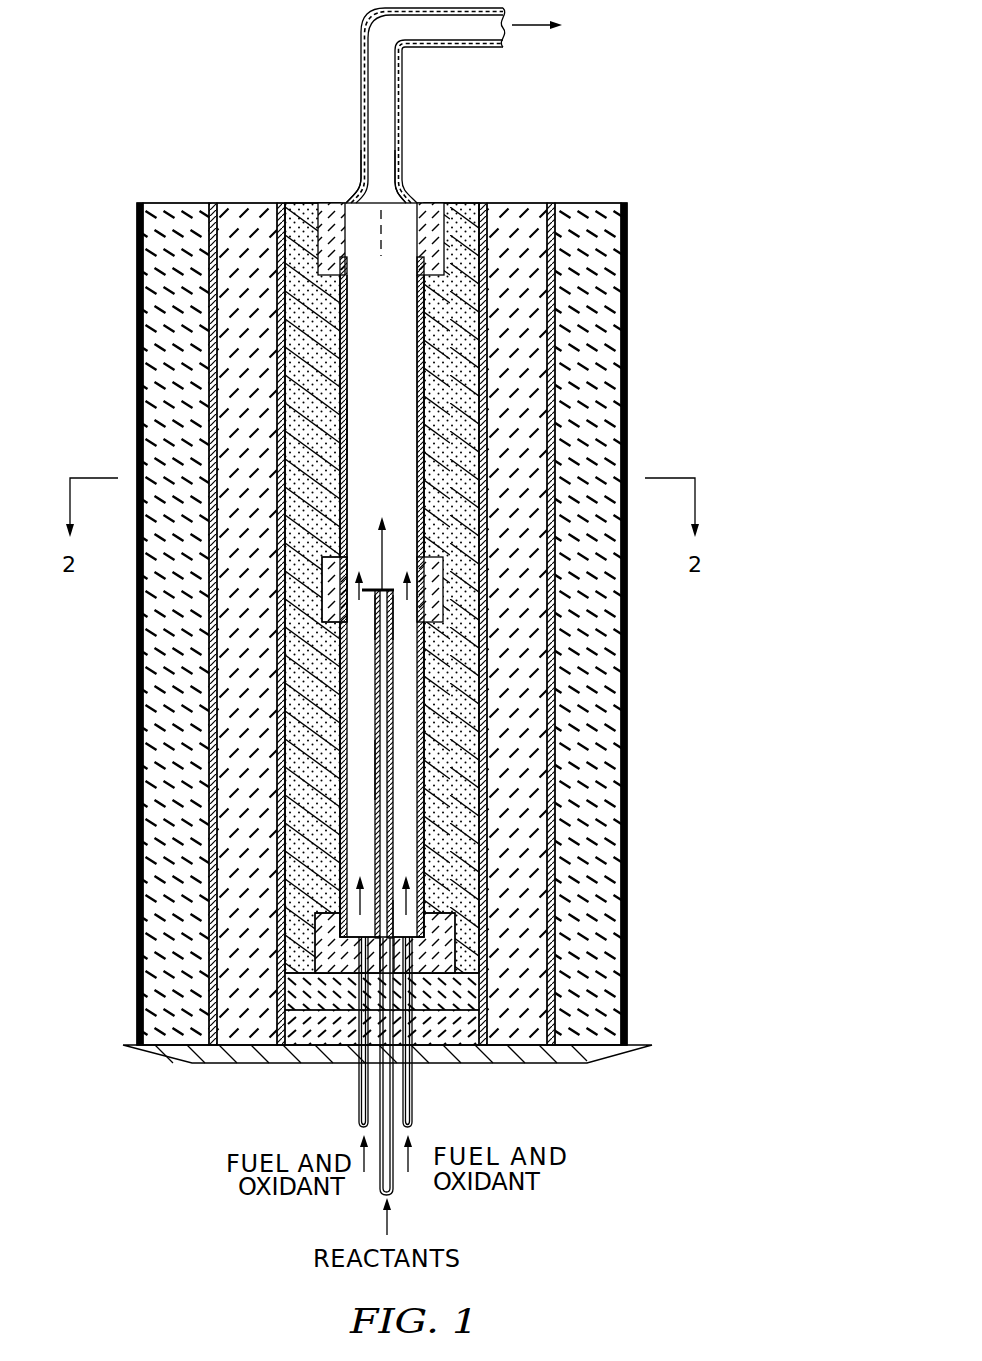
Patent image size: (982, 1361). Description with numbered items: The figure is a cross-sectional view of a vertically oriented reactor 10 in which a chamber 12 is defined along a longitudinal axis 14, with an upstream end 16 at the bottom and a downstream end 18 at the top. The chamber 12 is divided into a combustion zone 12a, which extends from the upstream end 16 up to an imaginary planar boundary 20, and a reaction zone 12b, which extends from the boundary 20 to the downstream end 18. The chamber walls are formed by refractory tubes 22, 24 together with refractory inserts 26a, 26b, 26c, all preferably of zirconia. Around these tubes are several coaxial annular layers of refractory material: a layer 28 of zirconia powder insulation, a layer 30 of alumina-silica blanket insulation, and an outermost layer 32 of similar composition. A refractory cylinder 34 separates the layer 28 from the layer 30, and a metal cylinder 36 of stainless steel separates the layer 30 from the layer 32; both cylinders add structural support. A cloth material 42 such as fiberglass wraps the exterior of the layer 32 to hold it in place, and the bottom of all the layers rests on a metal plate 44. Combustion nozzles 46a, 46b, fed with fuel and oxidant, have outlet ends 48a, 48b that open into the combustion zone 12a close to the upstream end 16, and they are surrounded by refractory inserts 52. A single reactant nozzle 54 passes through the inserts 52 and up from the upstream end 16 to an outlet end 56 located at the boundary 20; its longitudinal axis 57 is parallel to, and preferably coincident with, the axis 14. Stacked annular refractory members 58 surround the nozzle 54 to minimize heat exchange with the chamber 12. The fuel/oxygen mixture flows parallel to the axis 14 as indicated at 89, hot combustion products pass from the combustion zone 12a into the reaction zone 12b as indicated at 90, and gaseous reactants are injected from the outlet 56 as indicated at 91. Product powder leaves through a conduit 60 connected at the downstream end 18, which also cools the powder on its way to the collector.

The reactor 10 is at (662, 350).
The chamber 12 is at (415, 197).
The combustion zone 12a is at (349, 661).
The reaction zone 12b is at (398, 384).
The longitudinal axis 14 is at (358, 191).
The upstream end 16 is at (399, 937).
The downstream end 18 is at (395, 189).
The boundary 20 is at (362, 588).
The refractory tube 22 is at (375, 603).
The refractory tube 24 is at (348, 431).
The insert 26a is at (447, 915).
The insert 26b is at (337, 548).
The insert 26c is at (338, 247).
The layer 28 is at (470, 674).
The layer 30 is at (535, 674).
The layer 32 is at (608, 674).
The refractory cylinder 34 is at (487, 746).
The metal cylinder 36 is at (555, 745).
The cloth material 42 is at (628, 862).
The metal plate 44 is at (213, 1064).
The combustion nozzle 46a is at (359, 1120).
The combustion nozzle 46b is at (412, 1101).
The outlet end 48a is at (347, 943).
The outlet end 48b is at (424, 943).
The refractory inserts 52 is at (309, 1042).
The reactant nozzle 54 is at (392, 1192).
The outlet end 56 is at (386, 590).
The longitudinal axis 57 is at (380, 781).
The annular refractory members 58 is at (393, 600).
The conduit 60 is at (361, 72).
The fuel/oxygen mixture flow 89 is at (360, 875).
The hot combustion products flow 90 is at (335, 597).
The reactant injection 91 is at (386, 538).